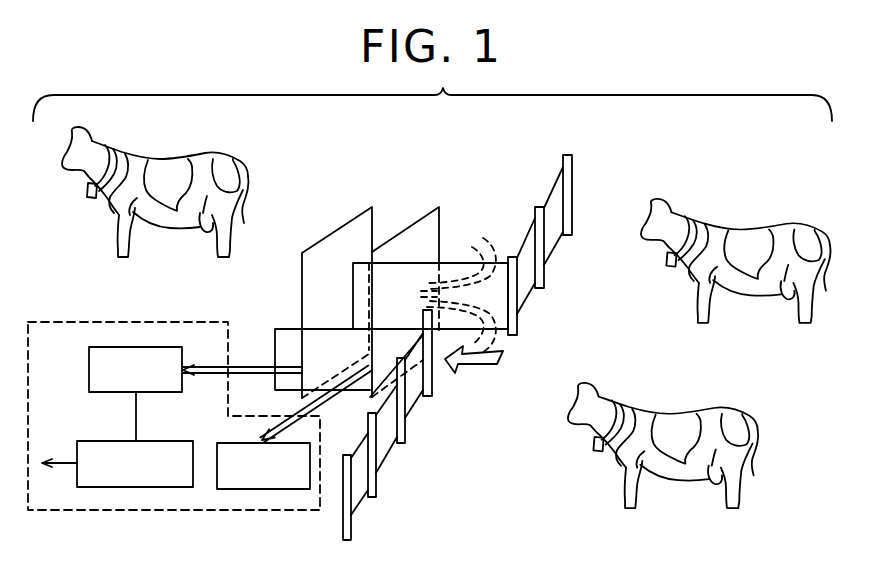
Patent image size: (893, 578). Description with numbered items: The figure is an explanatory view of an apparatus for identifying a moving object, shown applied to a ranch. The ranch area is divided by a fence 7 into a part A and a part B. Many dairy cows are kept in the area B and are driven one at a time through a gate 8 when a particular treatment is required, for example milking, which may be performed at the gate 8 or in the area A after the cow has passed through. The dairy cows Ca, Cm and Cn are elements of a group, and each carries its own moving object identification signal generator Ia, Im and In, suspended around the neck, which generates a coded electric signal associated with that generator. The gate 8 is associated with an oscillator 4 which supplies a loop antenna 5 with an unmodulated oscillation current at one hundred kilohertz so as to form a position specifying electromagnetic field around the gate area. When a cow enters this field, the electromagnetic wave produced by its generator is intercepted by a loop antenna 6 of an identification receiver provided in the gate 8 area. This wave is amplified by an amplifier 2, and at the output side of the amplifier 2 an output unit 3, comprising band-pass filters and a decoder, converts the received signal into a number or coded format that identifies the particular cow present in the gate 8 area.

The dairy cow Ca is at (163, 159).
The moving object identification signal generator Ia is at (89, 199).
The dairy cow Cm is at (718, 228).
The moving object identification signal generator Im is at (667, 262).
The dairy cow Cn is at (677, 410).
The moving object identification signal generator In is at (603, 442).
The part A of ranch area A is at (264, 274).
The part B of ranch area B is at (752, 384).
The amplifier 2 is at (162, 347).
The output unit 3 is at (147, 487).
The oscillator 4 is at (275, 489).
The loop antenna 5 is at (433, 208).
The loop antenna 6 is at (334, 233).
The fence 7 is at (406, 434).
The gate 8 is at (402, 299).